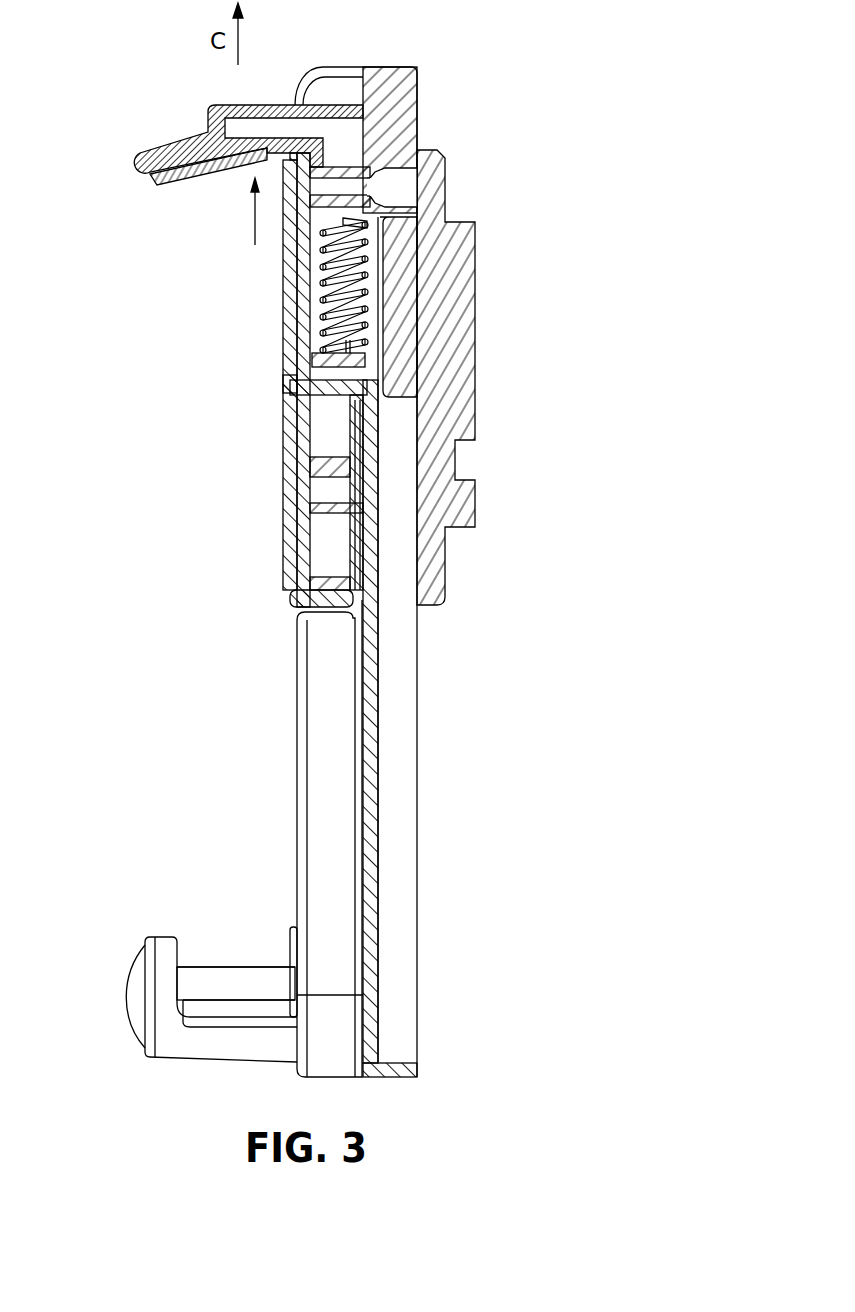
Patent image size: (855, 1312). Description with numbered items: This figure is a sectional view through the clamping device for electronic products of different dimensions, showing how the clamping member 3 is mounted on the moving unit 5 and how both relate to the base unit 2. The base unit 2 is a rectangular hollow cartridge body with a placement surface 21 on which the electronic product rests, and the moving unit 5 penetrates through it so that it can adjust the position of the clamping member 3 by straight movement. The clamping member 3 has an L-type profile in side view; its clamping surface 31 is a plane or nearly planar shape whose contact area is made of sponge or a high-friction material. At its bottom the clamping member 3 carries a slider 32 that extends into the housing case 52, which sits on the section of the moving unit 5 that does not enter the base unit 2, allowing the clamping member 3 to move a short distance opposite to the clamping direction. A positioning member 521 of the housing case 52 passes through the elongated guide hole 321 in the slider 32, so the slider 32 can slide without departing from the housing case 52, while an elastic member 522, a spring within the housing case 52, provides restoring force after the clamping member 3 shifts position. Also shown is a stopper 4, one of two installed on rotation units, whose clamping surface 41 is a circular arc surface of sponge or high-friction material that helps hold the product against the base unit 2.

The base unit 2 is at (303, 450).
The placement surface 21 is at (292, 495).
The clamping member 3 is at (248, 132).
The clamping surface 31 is at (198, 172).
The slider 32 is at (350, 362).
The elongated guide hole 321 is at (320, 222).
The stopper 4 is at (164, 956).
The clamping surface 41 is at (222, 972).
The moving unit 5 is at (370, 467).
The housing case 52 is at (354, 346).
The positioning member 521 is at (340, 172).
The elastic member 522 is at (352, 288).